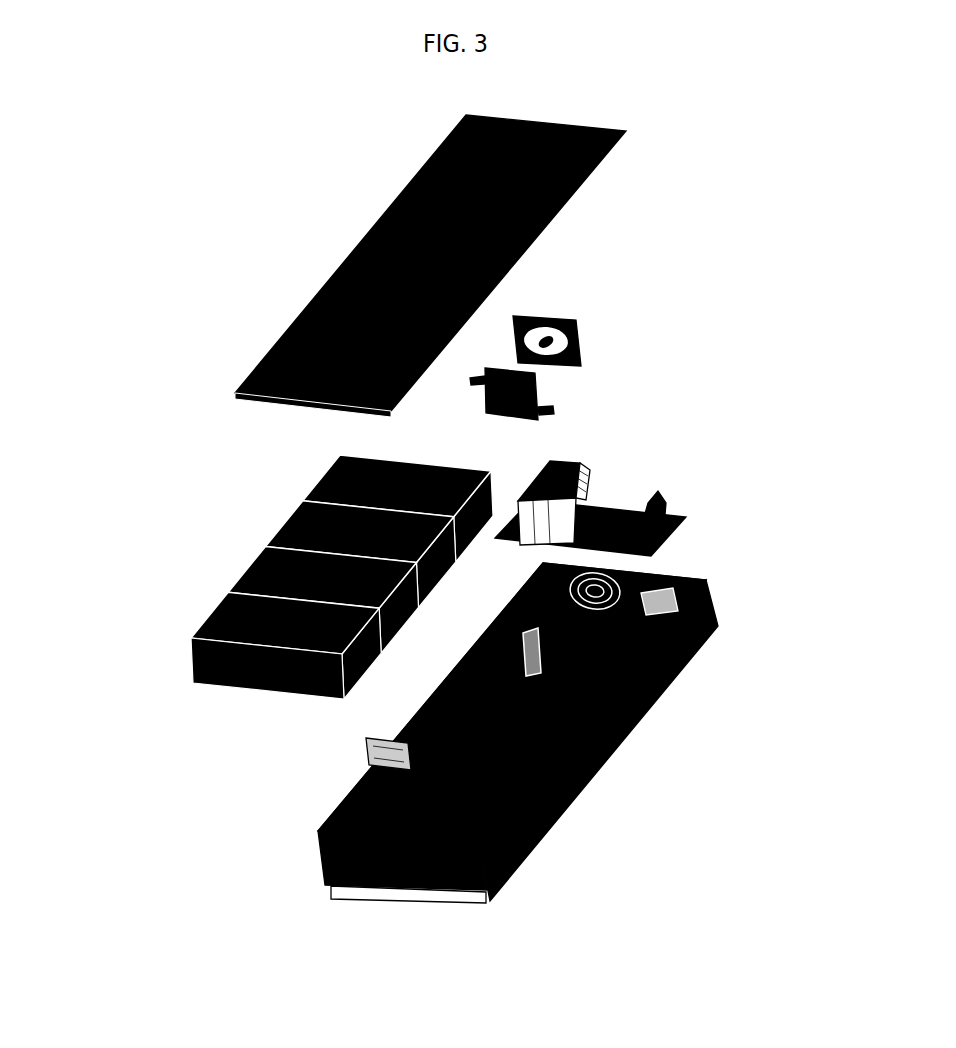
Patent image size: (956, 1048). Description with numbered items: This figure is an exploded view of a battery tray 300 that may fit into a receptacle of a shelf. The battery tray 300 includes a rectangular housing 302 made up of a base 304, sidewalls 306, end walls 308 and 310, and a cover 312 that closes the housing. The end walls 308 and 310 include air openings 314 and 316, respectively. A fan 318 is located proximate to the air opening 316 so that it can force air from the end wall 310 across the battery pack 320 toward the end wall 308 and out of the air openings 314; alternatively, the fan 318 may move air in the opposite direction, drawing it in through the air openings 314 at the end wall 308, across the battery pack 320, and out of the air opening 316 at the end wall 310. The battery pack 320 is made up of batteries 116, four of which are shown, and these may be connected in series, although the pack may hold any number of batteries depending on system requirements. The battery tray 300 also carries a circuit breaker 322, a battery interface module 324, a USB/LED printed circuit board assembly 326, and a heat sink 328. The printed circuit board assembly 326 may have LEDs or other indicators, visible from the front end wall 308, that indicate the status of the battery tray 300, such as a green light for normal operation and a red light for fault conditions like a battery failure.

The battery tray 300 is at (260, 110).
The housing 302 is at (541, 700).
The base 304 is at (545, 718).
The sidewalls 306 is at (347, 803).
The end wall 308 is at (318, 855).
The end wall 310 is at (668, 567).
The cover 312 is at (348, 233).
The air openings 314 is at (368, 865).
The air opening 316 is at (620, 563).
The fan 318 is at (570, 322).
The battery pack 320 is at (275, 577).
The batteries 116 is at (332, 455).
The circuit breaker 322 is at (532, 388).
The battery interface module 324 is at (652, 500).
The USB/LED printed circuit board assembly 326 is at (357, 735).
The heat sink 328 is at (573, 462).